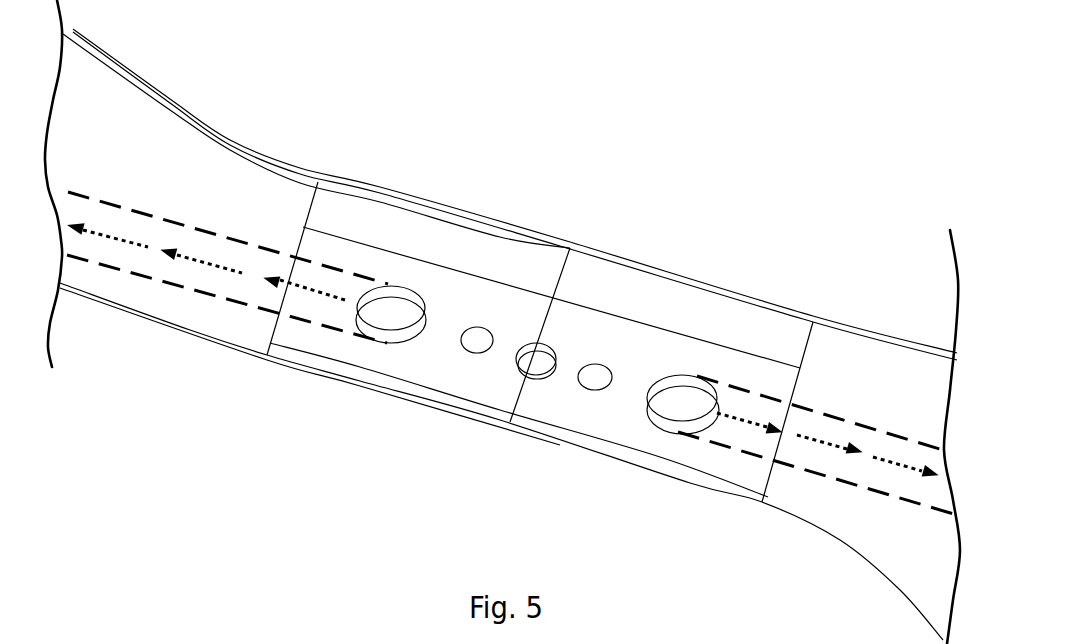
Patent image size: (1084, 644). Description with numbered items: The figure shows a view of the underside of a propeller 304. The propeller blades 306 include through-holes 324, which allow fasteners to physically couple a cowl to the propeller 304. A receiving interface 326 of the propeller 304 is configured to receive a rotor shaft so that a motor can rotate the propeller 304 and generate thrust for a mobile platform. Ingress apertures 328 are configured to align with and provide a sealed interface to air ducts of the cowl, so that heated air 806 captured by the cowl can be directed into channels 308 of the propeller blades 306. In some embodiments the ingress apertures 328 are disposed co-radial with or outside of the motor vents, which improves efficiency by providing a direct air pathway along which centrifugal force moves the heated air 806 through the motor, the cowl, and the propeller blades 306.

The propeller 304 is at (666, 173).
The propeller blades 306 is at (214, 337).
The channels 308 is at (129, 272).
The through-holes 324 is at (482, 343).
The receiving interface 326 is at (545, 372).
The ingress apertures 328 is at (388, 315).
The heated air 806 is at (204, 265).